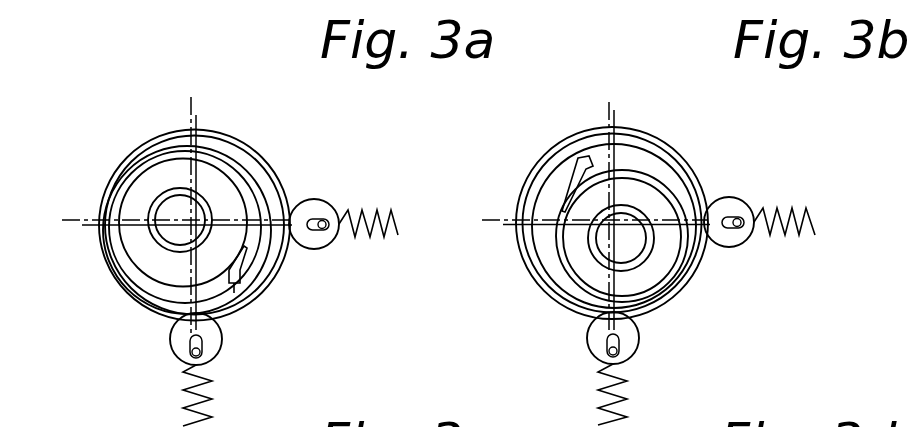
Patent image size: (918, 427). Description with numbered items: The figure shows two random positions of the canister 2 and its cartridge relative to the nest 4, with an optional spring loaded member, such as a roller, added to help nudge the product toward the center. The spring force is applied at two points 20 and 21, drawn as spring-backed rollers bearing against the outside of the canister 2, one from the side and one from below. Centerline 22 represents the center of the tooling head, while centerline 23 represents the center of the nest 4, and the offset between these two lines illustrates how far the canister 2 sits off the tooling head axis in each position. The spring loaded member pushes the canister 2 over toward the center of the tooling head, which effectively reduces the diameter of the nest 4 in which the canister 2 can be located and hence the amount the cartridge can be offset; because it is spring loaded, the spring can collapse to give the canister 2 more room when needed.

In FIG. 3A, the canister 2 is at (262, 272).
In FIG. 3B, the canister 2 is at (676, 272).
In FIG. 3A, the nest 4 is at (163, 320).
In FIG. 3B, the nest 4 is at (578, 310).
In FIG. 3A, the spring force application point 20 is at (340, 200).
In FIG. 3B, the spring force application point 20 is at (735, 198).
In FIG. 3A, the spring force application point 21 is at (222, 350).
In FIG. 3B, the spring force application point 21 is at (638, 350).
In FIG. 3A, the centerline 22 is at (191, 97).
In FIG. 3B, the centerline 22 is at (609, 105).
In FIG. 3A, the centerline 23 is at (197, 118).
In FIG. 3B, the centerline 23 is at (614, 118).